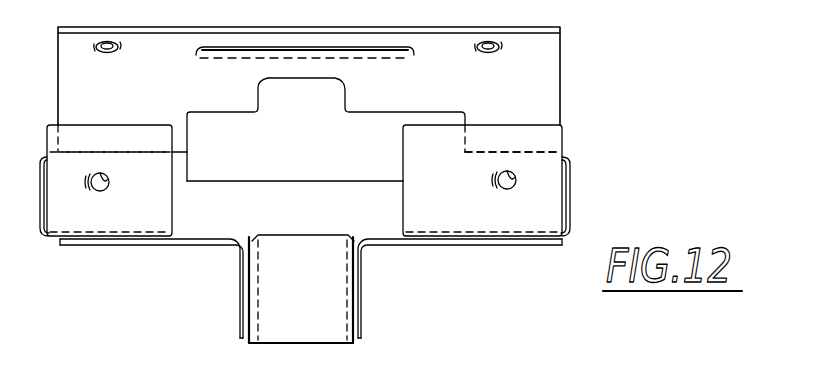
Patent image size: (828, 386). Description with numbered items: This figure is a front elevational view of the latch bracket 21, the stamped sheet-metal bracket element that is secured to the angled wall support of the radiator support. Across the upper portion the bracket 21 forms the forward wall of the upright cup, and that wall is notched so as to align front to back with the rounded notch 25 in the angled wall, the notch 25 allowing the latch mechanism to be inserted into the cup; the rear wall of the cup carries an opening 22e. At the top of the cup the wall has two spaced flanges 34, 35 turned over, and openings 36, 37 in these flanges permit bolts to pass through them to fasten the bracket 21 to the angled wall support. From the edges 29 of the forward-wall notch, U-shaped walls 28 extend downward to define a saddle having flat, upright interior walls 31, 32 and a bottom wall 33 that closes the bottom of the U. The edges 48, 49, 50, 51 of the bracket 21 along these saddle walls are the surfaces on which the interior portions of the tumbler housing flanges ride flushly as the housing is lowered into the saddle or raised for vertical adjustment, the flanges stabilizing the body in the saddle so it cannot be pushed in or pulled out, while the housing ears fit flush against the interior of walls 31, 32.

The latch bracket 21 is at (455, 385).
The opening 22e is at (188, 128).
The rounded notch 25 is at (342, 87).
The U-shaped walls 28 is at (282, 284).
The edges 29 is at (263, 236).
The interior wall 31 is at (253, 290).
The interior wall 32 is at (352, 280).
The bottom wall 33 is at (315, 335).
The flange 34 is at (548, 204).
The flange 35 is at (78, 222).
The opening 36 is at (110, 184).
The opening 37 is at (505, 184).
The edge 48 is at (244, 236).
The edge 49 is at (243, 343).
The edge 50 is at (353, 237).
The edge 51 is at (352, 349).